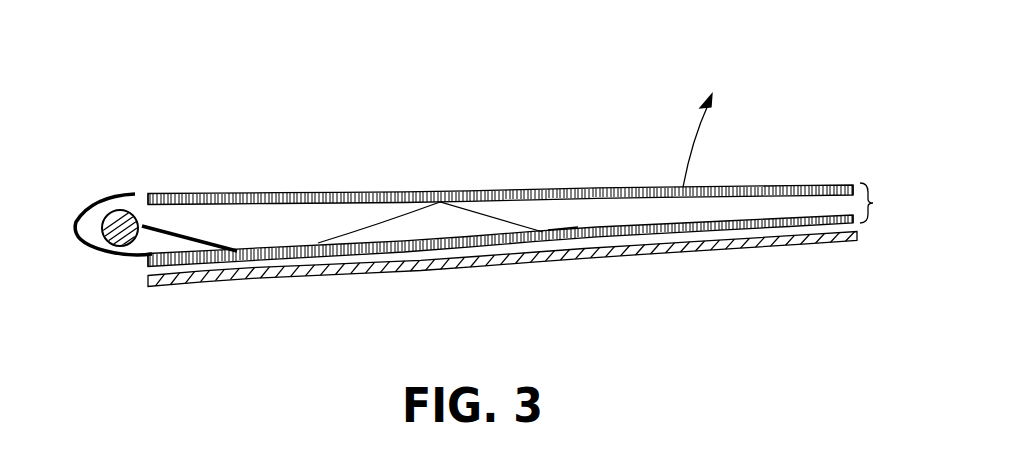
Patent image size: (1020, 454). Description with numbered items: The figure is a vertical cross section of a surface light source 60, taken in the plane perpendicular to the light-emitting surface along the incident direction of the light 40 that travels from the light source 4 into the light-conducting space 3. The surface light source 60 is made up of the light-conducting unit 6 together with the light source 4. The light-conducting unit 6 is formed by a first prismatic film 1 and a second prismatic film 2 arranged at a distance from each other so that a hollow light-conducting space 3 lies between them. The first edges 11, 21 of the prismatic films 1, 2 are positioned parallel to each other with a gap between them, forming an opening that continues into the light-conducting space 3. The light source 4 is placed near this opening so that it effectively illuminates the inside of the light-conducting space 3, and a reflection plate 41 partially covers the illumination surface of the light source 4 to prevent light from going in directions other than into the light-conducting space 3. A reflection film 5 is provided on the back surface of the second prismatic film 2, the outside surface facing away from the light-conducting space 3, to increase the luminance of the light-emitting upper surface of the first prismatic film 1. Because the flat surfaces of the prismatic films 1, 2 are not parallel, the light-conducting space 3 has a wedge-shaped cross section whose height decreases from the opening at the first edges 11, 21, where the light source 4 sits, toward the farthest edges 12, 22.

The first prismatic film 1 is at (745, 187).
The first edge of first prismatic film 11 is at (150, 193).
The farthest edge of first prismatic film 12 is at (855, 183).
The second prismatic film 2 is at (708, 231).
The first edge of second prismatic film 21 is at (143, 273).
The farthest edge of second prismatic film 22 is at (857, 224).
The light-conducting space 3 is at (563, 213).
The light source 4 is at (106, 212).
The light 40 is at (378, 224).
The reflection plate 41 is at (83, 248).
The reflection film 5 is at (803, 243).
The light-conducting unit 6 is at (879, 203).
The surface light source 60 is at (500, 163).